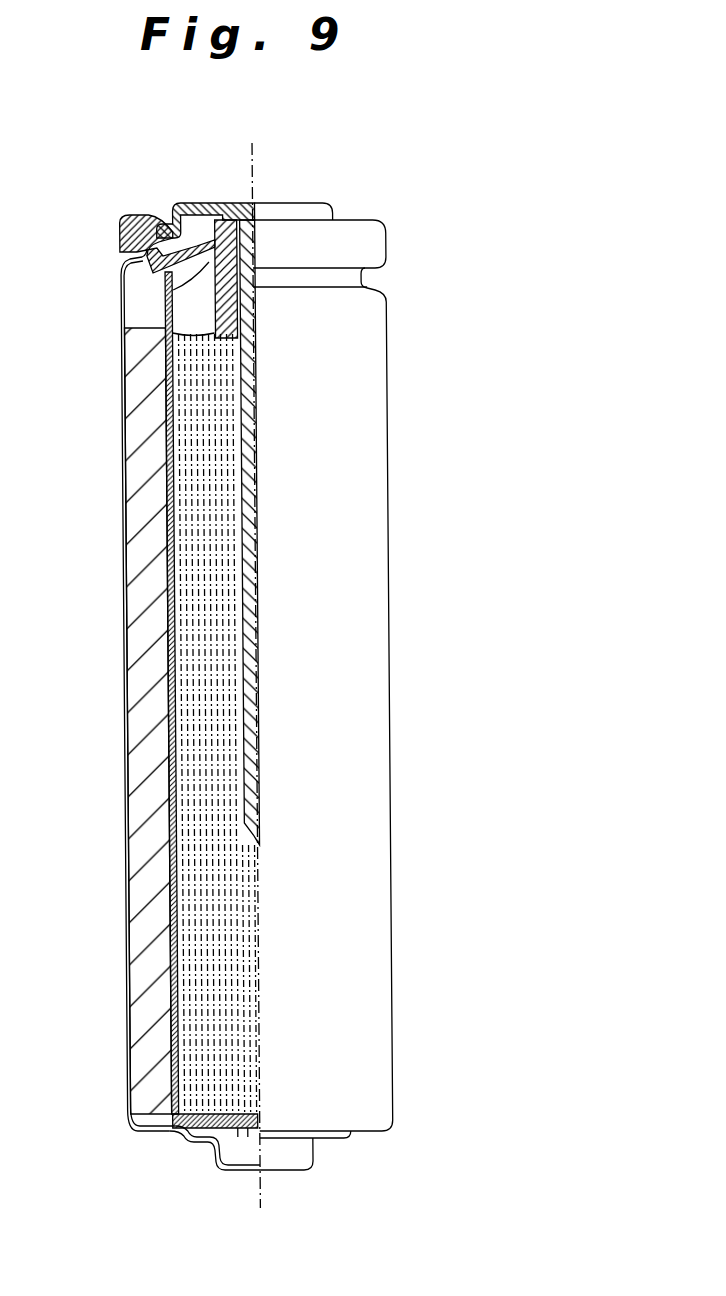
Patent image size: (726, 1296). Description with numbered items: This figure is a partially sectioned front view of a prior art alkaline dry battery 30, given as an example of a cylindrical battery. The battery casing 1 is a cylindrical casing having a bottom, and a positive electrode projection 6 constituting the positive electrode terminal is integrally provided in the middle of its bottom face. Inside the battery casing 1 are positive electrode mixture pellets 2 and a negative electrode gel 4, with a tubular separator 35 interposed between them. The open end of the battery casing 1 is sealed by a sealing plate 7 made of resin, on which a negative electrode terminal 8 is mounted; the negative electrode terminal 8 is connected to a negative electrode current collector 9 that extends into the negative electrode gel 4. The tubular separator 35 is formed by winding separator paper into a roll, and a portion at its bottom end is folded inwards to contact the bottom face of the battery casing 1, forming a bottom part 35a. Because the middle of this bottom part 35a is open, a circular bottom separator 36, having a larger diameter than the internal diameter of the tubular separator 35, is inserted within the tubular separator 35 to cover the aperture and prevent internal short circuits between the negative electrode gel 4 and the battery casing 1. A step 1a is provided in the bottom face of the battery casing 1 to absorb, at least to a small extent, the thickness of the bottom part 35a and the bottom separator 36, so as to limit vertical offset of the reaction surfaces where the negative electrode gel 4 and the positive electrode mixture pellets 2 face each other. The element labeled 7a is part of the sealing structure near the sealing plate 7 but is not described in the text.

The battery casing 1 is at (128, 612).
The step 1a is at (177, 1140).
The positive electrode mixture pellets 2 is at (152, 772).
The negative electrode gel 4 is at (193, 687).
The positive electrode projection 6 is at (212, 1158).
The sealing plate 7 is at (160, 272).
The inner portion of gasket 7a is at (232, 300).
The negative electrode terminal 8 is at (215, 203).
The negative electrode current collector 9 is at (247, 463).
The alkaline dry battery 30 is at (417, 384).
The tubular separator 35 is at (173, 940).
The bottom part 35a is at (193, 1133).
The bottom separator 36 is at (240, 1137).